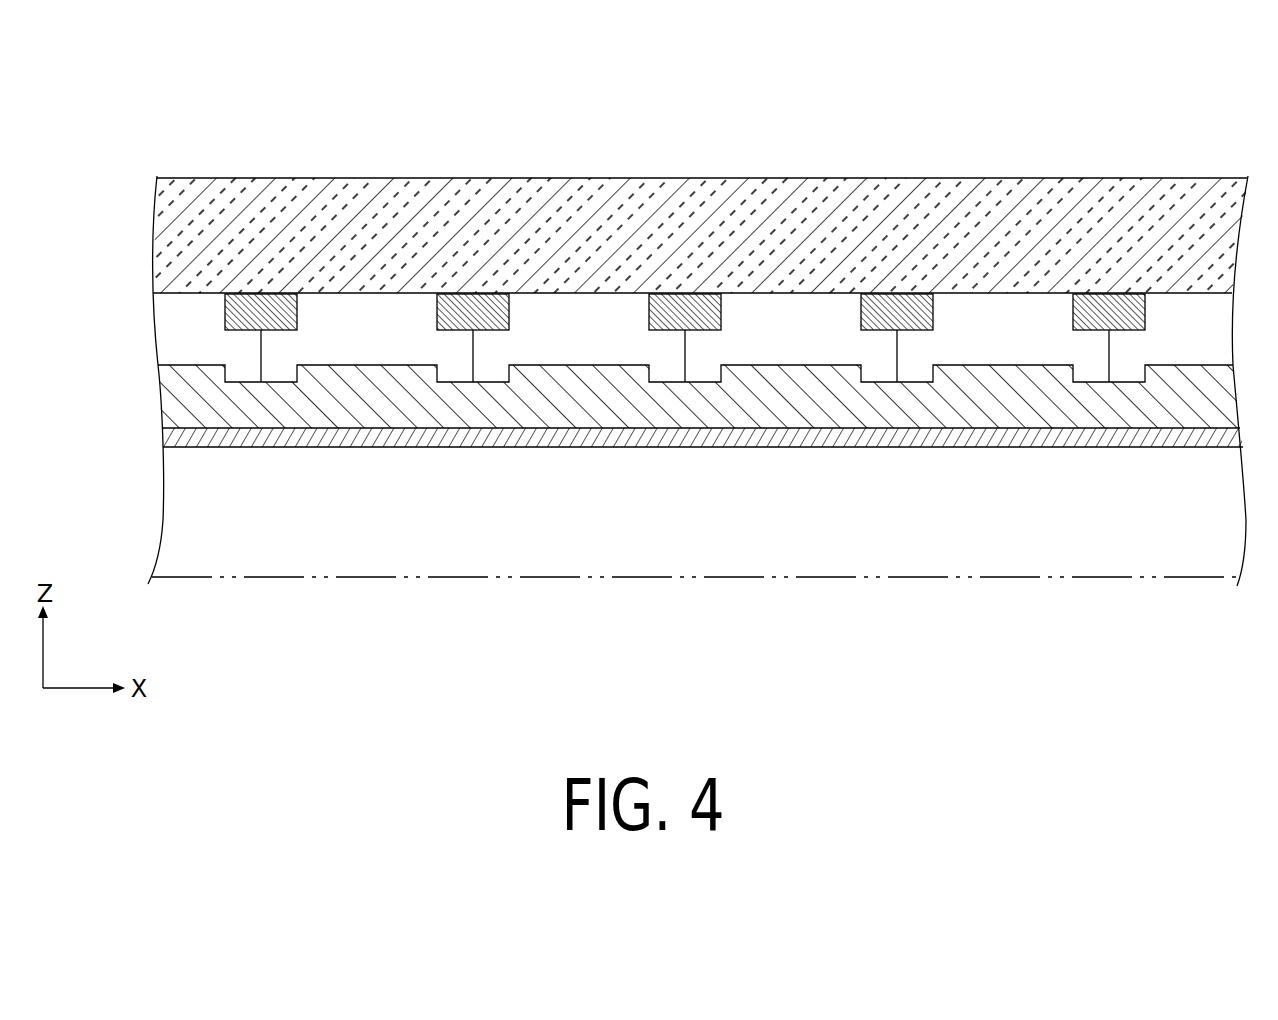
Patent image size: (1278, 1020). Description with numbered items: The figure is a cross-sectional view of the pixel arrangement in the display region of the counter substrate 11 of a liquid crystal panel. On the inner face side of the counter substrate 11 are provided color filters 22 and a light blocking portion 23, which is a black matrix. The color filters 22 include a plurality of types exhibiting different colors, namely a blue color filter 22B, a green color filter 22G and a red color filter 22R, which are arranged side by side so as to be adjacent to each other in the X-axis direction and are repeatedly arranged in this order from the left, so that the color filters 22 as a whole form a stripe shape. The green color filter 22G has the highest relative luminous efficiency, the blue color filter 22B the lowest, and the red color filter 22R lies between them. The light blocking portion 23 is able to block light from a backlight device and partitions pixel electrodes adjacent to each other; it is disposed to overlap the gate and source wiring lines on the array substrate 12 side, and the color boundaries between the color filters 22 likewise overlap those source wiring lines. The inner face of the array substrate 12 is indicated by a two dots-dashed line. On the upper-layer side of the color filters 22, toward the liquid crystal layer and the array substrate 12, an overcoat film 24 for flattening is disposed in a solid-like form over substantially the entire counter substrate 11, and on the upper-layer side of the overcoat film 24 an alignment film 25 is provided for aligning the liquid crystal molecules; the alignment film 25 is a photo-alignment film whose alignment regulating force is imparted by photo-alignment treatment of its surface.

The counter substrate 11 is at (327, 192).
The array substrate 12 is at (387, 577).
The color filters 22 is at (942, 91).
The blue color filter 22B is at (623, 314).
The green color filter 22G is at (830, 314).
The red color filter 22R is at (967, 314).
The light blocking portion 23 is at (453, 302).
The overcoat film 24 is at (573, 403).
The alignment film 25 is at (707, 437).